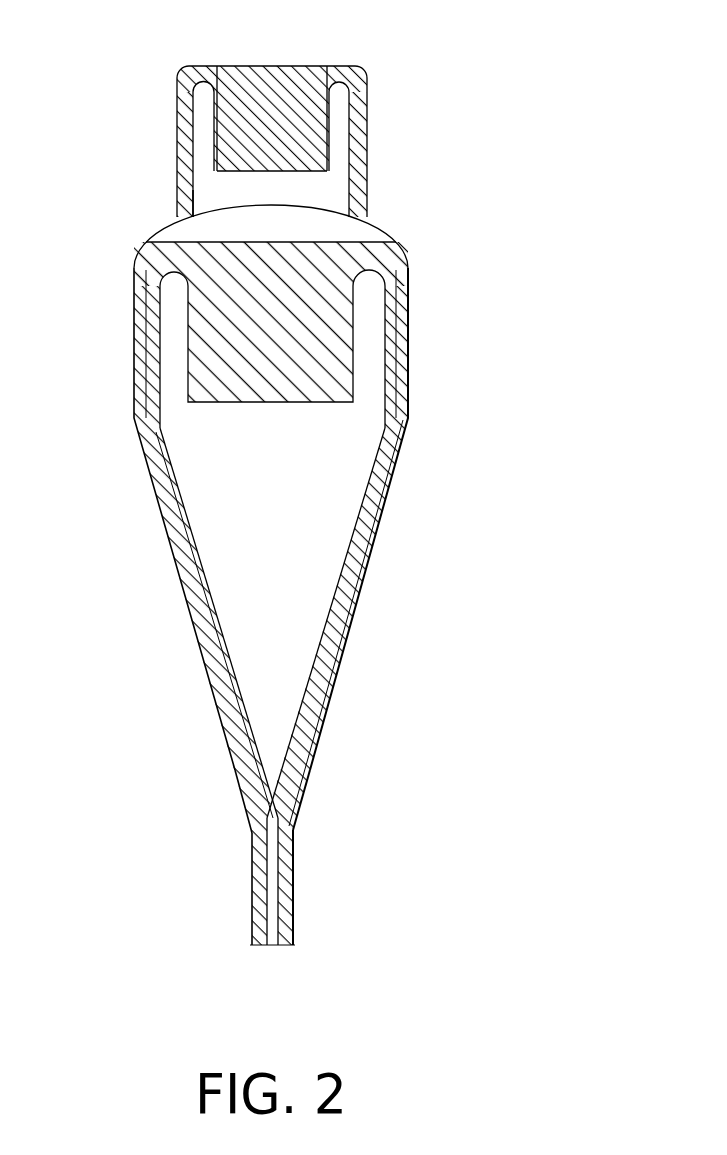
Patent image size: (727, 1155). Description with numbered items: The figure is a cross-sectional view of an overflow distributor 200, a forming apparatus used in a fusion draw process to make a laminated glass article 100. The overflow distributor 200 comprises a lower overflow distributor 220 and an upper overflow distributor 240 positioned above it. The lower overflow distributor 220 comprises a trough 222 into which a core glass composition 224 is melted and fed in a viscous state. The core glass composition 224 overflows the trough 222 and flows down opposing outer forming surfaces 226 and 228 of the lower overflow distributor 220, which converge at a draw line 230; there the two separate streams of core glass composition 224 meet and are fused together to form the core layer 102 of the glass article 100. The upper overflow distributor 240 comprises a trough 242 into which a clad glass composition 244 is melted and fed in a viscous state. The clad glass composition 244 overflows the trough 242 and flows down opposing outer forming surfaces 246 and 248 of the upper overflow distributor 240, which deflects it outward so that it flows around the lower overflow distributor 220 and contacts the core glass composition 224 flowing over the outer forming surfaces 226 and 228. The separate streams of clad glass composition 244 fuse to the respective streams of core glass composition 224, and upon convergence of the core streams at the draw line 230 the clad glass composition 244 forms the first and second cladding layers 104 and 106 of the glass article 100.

The glass article 100 is at (199, 957).
The core layer 102 is at (253, 843).
The first cladding layer 104 is at (253, 902).
The second cladding layer 106 is at (292, 897).
The overflow distributor 200 is at (486, 103).
The lower overflow distributor 220 is at (375, 317).
The trough 222 is at (187, 343).
The core glass composition 224 is at (267, 242).
The outer forming surface 226 is at (175, 477).
The outer forming surface 228 is at (358, 507).
The draw line 230 is at (303, 807).
The upper overflow distributor 240 is at (348, 102).
The trough 242 is at (213, 133).
The clad glass composition 244 is at (278, 66).
The outer forming surface 246 is at (195, 182).
The outer forming surface 248 is at (337, 150).